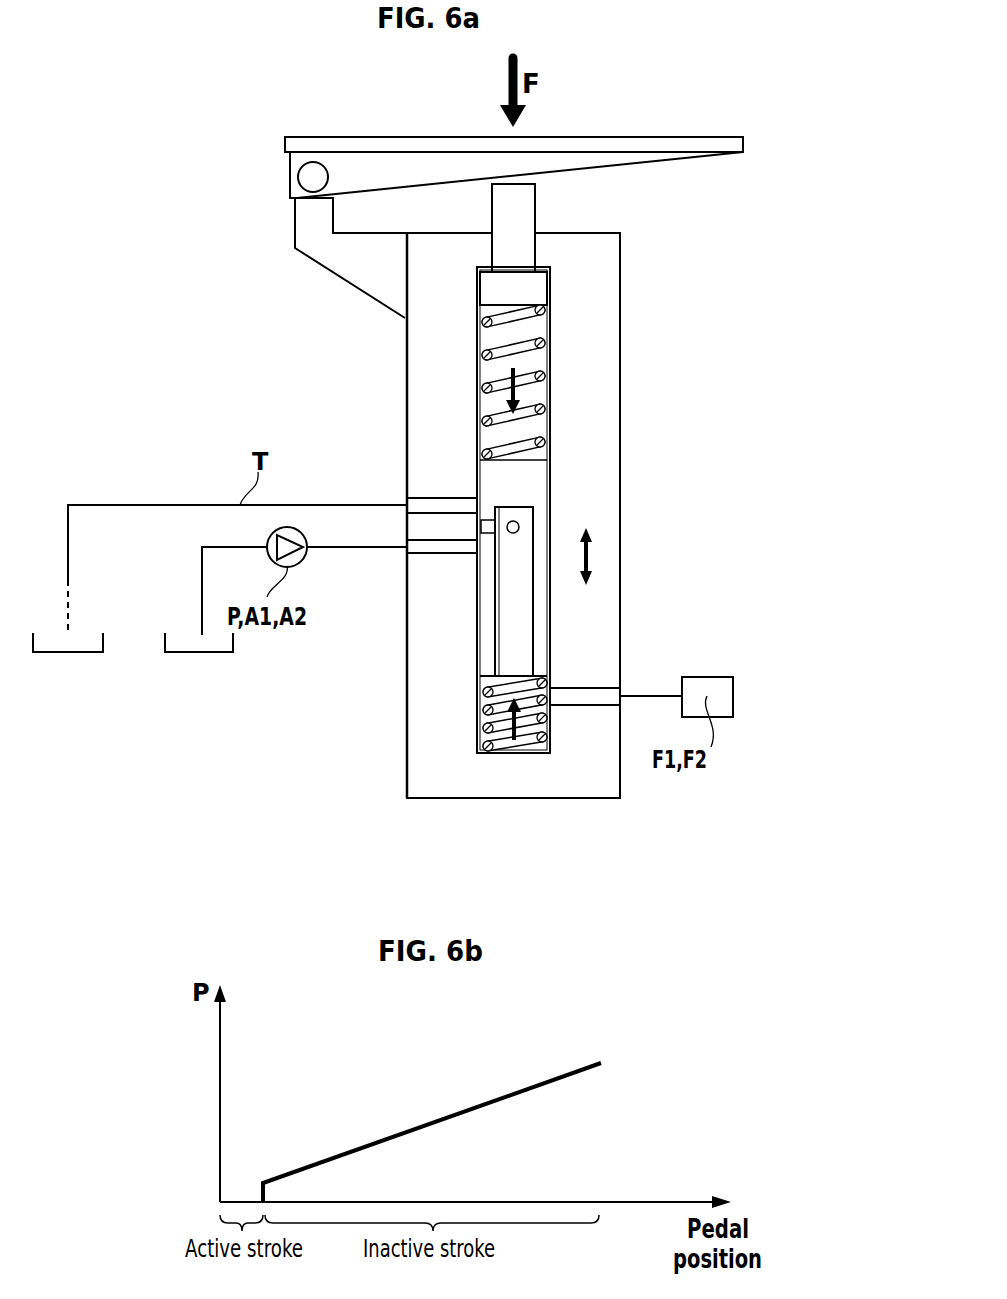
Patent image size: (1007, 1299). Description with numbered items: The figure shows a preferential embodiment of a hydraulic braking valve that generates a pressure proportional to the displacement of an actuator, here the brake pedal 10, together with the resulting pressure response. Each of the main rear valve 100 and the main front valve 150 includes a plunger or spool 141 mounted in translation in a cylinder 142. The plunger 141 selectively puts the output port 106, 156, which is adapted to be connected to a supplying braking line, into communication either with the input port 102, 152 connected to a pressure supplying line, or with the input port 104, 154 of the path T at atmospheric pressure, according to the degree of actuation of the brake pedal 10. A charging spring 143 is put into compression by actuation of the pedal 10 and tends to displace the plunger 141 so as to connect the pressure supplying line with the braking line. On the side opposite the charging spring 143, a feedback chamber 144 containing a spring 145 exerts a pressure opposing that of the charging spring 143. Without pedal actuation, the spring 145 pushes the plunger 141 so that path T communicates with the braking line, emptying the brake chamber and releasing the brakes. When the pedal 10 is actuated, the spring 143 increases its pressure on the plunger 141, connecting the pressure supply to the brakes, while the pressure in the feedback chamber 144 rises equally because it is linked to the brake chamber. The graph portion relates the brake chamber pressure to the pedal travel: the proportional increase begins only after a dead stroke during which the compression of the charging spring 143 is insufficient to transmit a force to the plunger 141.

The brake pedal 10 is at (755, 143).
The main rear valve 100 is at (436, 513).
The main front valve 150 is at (455, 513).
The input port 102 is at (399, 574).
The input port 152 is at (443, 548).
The input port 104 is at (398, 482).
The input port 154 is at (443, 505).
The output port 106 is at (626, 646).
The output port 156 is at (583, 697).
The plunger 141 is at (533, 487).
The cylinder 142 is at (543, 392).
The charging spring 143 is at (542, 312).
The feedback chamber 144 is at (538, 745).
The spring 145 is at (451, 757).